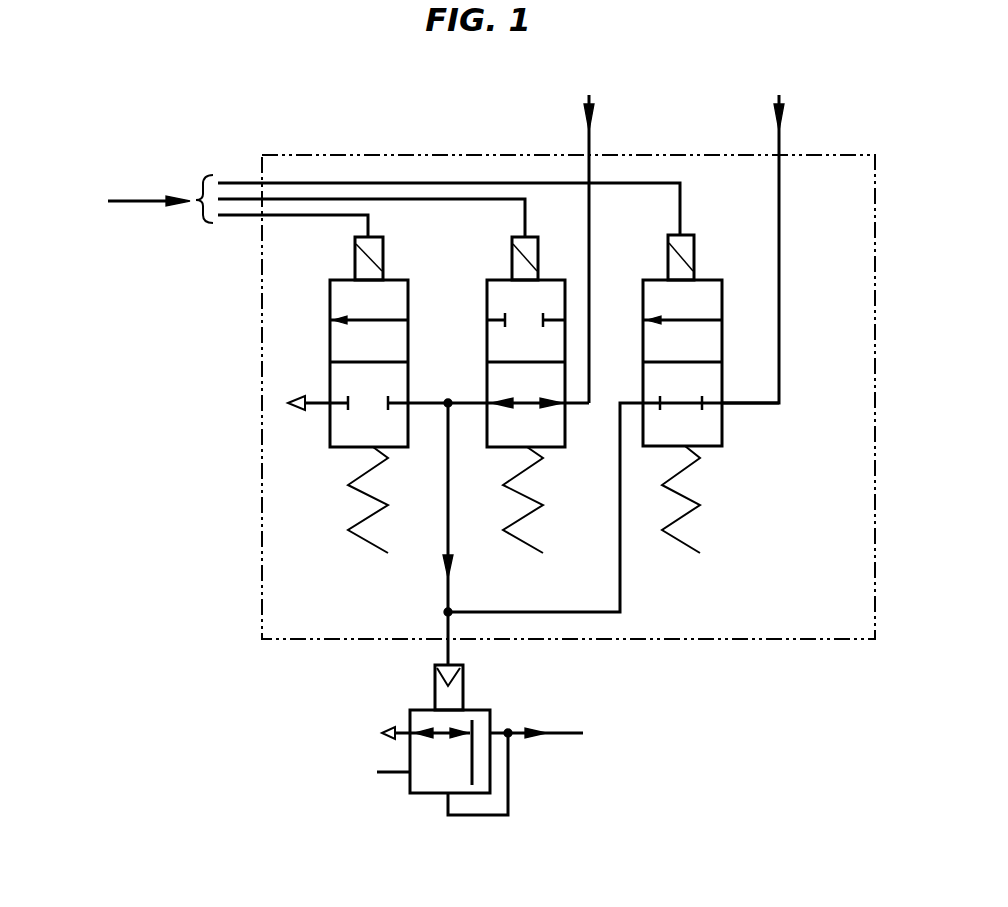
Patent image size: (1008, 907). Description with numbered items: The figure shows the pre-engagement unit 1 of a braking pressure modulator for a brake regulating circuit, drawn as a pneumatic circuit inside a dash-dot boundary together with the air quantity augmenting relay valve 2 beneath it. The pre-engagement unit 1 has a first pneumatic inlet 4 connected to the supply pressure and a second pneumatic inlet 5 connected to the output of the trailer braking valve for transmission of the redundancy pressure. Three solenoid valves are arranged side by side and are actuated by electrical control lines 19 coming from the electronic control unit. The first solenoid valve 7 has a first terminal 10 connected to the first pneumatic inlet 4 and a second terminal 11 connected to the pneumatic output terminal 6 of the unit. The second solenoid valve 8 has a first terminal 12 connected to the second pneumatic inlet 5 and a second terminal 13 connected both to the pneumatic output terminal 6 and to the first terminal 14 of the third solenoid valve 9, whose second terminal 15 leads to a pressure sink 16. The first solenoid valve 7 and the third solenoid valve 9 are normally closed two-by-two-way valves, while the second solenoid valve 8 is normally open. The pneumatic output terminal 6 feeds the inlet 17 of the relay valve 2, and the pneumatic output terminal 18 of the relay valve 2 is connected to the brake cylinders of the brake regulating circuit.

The pre-engagement unit 1 is at (756, 728).
The relay valve 2 is at (430, 785).
The first pneumatic inlet 4 is at (783, 104).
The second pneumatic inlet 5 is at (593, 104).
The pneumatic output terminal 6 is at (448, 641).
The first solenoid valve 7 is at (726, 476).
The second solenoid valve 8 is at (566, 482).
The third solenoid valve 9 is at (327, 482).
The first terminal 10 is at (724, 407).
The second terminal 11 is at (633, 401).
The first terminal 12 is at (572, 406).
The second terminal 13 is at (484, 402).
The first terminal 14 is at (414, 406).
The second terminal 15 is at (326, 402).
The pressure sink 16 is at (301, 410).
The inlet 17 is at (452, 667).
The pneumatic output terminal 18 is at (568, 736).
The electrical control lines 19 is at (126, 204).